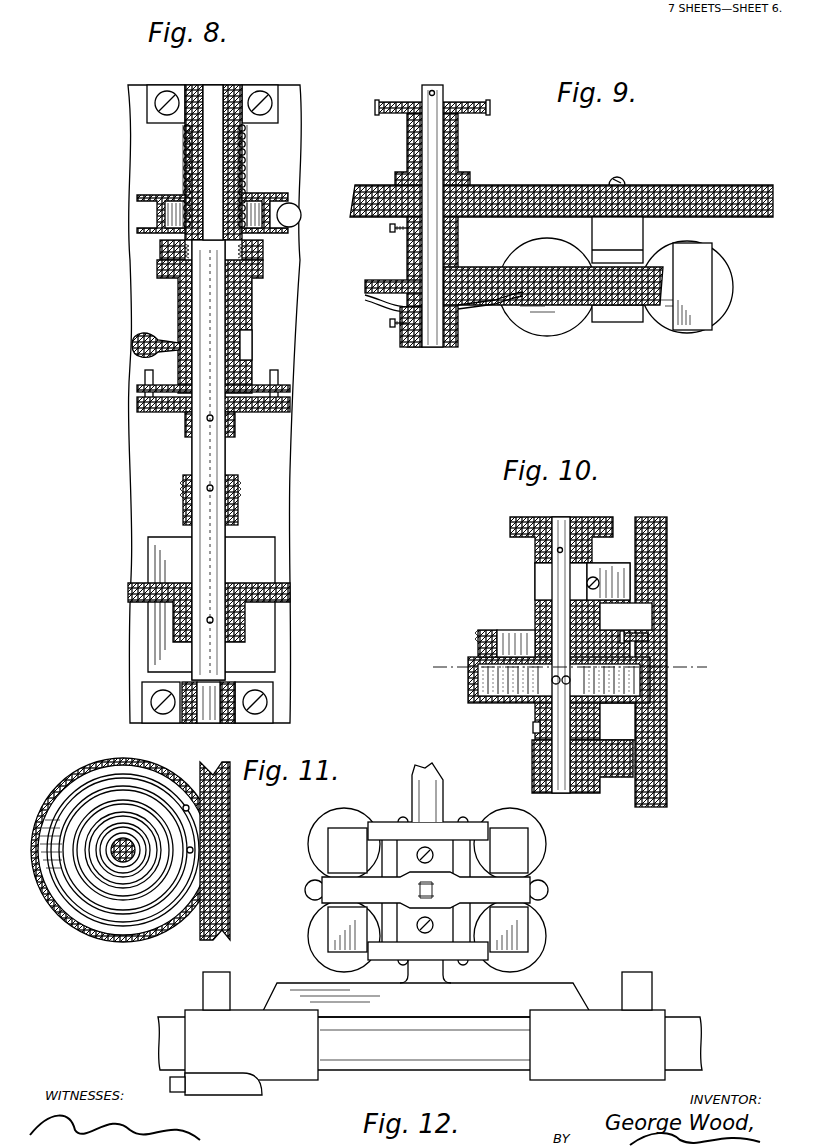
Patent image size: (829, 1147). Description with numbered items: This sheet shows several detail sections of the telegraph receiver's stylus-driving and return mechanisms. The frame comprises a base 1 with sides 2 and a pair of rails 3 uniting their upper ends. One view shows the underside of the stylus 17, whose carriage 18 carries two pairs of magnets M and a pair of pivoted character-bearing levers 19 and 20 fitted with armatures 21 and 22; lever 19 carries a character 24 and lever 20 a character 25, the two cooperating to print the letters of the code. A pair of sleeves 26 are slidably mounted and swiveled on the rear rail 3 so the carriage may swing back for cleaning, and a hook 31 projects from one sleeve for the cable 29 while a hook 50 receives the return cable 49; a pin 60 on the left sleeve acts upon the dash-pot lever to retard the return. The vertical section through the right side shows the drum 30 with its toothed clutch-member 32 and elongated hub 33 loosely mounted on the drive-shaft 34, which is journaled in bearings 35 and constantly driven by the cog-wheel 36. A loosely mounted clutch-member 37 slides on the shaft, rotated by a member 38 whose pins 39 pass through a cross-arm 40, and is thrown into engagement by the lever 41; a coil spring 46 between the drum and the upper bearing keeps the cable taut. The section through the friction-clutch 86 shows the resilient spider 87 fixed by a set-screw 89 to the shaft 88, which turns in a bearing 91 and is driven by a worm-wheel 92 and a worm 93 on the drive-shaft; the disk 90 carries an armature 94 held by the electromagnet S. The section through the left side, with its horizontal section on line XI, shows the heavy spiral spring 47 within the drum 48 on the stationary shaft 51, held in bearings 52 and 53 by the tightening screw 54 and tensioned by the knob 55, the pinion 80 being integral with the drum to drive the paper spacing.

In FIG. 12, the base 1 is at (320, 862).
In FIG. 8, the sides 2 is at (130, 475).
In FIG. 9, the sides 2 is at (722, 190).
In FIG. 10, the sides 2 is at (667, 525).
In FIG. 11, the sides 2 is at (205, 932).
In FIG. 12, the rails 3 is at (430, 1043).
In FIG. 12, the stylus 17 is at (405, 792).
In FIG. 12, the carriage 18 is at (445, 790).
In FIG. 12, the character-bearing lever 19 is at (440, 889).
In FIG. 12, the character-bearing lever 20 is at (390, 889).
In FIG. 12, the armature 21 is at (509, 890).
In FIG. 12, the armature 22 is at (347, 890).
In FIG. 12, the character 24 is at (418, 928).
In FIG. 12, the character 25 is at (435, 861).
In FIG. 12, the sleeves 26 is at (425, 1045).
In FIG. 8, the cable 29 is at (292, 218).
In FIG. 9, the cable 29 is at (390, 229).
In FIG. 8, the drum 30 is at (150, 213).
In FIG. 12, the hook 31 is at (640, 972).
In FIG. 8, the toothed clutch-member 32 is at (160, 250).
In FIG. 8, the elongated hub 33 is at (183, 142).
In FIG. 8, the drive-shaft 34 is at (192, 457).
In FIG. 8, the bearings 35 is at (195, 85).
In FIG. 8, the cog-wheel 36 is at (126, 597).
In FIG. 8, the toothed clutch-member 37 is at (160, 268).
In FIG. 8, the member 38 is at (137, 410).
In FIG. 8, the pins 39 is at (145, 378).
In FIG. 8, the cross-arm 40 is at (137, 389).
In FIG. 8, the lever 41 is at (132, 345).
In FIG. 8, the coil spring 46 is at (183, 162).
In FIG. 10, the spiral spring 47 is at (468, 687).
In FIG. 11, the spiral spring 47 is at (90, 782).
In FIG. 10, the drum 48 is at (468, 695).
In FIG. 11, the drum 48 is at (78, 922).
In FIG. 10, the cable 49 is at (650, 640).
In FIG. 12, the hook 50 is at (230, 975).
In FIG. 10, the stationary shaft 51 is at (560, 520).
In FIG. 11, the stationary shaft 51 is at (126, 862).
In FIG. 10, the bearing 52 is at (597, 793).
In FIG. 10, the bearing 53 is at (535, 583).
In FIG. 10, the tightening screw 54 is at (598, 578).
In FIG. 10, the knob 55 is at (510, 522).
In FIG. 12, the pin 60 is at (170, 1080).
In FIG. 10, the pinion 80 is at (533, 727).
In FIG. 9, the friction-clutch 86 is at (400, 322).
In FIG. 9, the resilient spider 87 is at (474, 306).
In FIG. 9, the shaft 88 is at (430, 347).
In FIG. 9, the set-screw 89 is at (392, 330).
In FIG. 9, the disk 90 is at (365, 286).
In FIG. 9, the bearing 91 is at (407, 150).
In FIG. 9, the worm-wheel 92 is at (405, 102).
In FIG. 8, the worm 93 is at (180, 508).
In FIG. 9, the armature 94 is at (622, 305).
In FIG. 9, the electromagnet S is at (545, 337).
In FIG. 12, the magnets M is at (330, 870).
In FIG. 10, the section line XI— XI is at (569, 666).